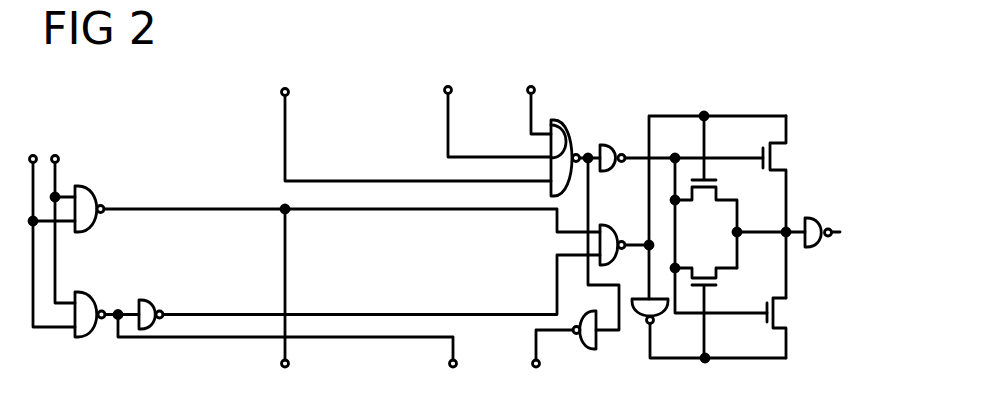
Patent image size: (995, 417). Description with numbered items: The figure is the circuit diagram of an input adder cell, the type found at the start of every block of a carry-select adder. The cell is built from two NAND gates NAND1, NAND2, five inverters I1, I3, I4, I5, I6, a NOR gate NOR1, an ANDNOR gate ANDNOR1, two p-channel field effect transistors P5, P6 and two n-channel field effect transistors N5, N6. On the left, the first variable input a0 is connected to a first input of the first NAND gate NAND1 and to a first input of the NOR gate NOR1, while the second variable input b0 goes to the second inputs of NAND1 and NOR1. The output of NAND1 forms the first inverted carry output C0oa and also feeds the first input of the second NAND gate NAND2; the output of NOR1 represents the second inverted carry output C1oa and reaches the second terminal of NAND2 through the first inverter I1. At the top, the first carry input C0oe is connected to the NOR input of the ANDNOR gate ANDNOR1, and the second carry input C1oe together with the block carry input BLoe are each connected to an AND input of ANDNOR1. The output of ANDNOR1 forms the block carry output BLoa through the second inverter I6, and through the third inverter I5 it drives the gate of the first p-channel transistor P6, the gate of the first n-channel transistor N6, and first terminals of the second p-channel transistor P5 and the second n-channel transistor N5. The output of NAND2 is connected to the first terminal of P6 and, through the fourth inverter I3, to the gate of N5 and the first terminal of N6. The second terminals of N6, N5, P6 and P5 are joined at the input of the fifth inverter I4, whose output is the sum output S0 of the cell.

The first variable input a0 is at (43, 221).
The second variable input b0 is at (64, 128).
The first NAND gate NAND1 is at (80, 232).
The NOR gate NOR1 is at (251, 337).
The first inverter I1 is at (368, 292).
The first carry input C0oe is at (402, 111).
The second carry input C1oe is at (485, 99).
The block carry input BLoe is at (524, 88).
The ANDNOR gate ANDNOR1 is at (565, 122).
The third inverter I5 is at (682, 210).
The second NAND gate NAND2 is at (600, 250).
The fourth inverter I3 is at (656, 321).
The second inverter I6 is at (579, 341).
The second p-channel field effect transistor P5 is at (738, 192).
The second n-channel field effect transistor N5 is at (704, 294).
The first p-channel field effect transistor P6 is at (791, 207).
The first n-channel field effect transistor N6 is at (793, 328).
The fifth inverter I4 is at (822, 214).
The sum output S0 is at (840, 232).
The first inverted carry output C0oa is at (310, 375).
The second inverted carry output C1oa is at (483, 375).
The block carry output BLoa is at (541, 386).